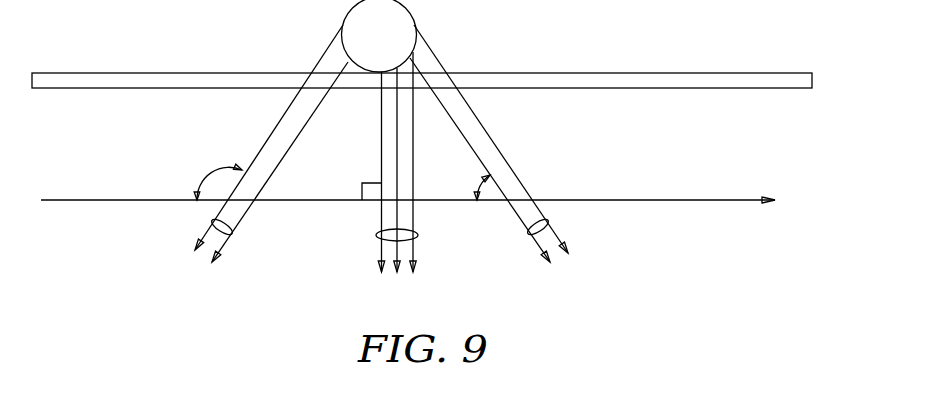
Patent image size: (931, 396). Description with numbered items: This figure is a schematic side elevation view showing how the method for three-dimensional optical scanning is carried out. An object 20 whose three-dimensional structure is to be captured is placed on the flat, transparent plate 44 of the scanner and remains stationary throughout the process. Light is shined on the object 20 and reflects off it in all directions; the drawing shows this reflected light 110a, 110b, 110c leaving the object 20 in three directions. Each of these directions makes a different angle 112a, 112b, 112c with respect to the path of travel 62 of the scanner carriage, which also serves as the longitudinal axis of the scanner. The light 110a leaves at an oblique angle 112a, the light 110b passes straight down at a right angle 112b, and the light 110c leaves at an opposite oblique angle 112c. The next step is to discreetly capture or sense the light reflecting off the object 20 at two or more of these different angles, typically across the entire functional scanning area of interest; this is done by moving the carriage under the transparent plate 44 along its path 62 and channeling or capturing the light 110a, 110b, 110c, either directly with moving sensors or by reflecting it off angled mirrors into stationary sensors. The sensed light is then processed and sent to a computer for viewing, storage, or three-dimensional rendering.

The object 20 is at (394, 50).
The transparent plate 44 is at (126, 81).
The path of travel 62 is at (102, 202).
The light 110a is at (233, 237).
The light 110b is at (377, 237).
The light 110c is at (526, 236).
The angle 112a is at (218, 168).
The angle 112b is at (362, 185).
The angle 112c is at (484, 180).